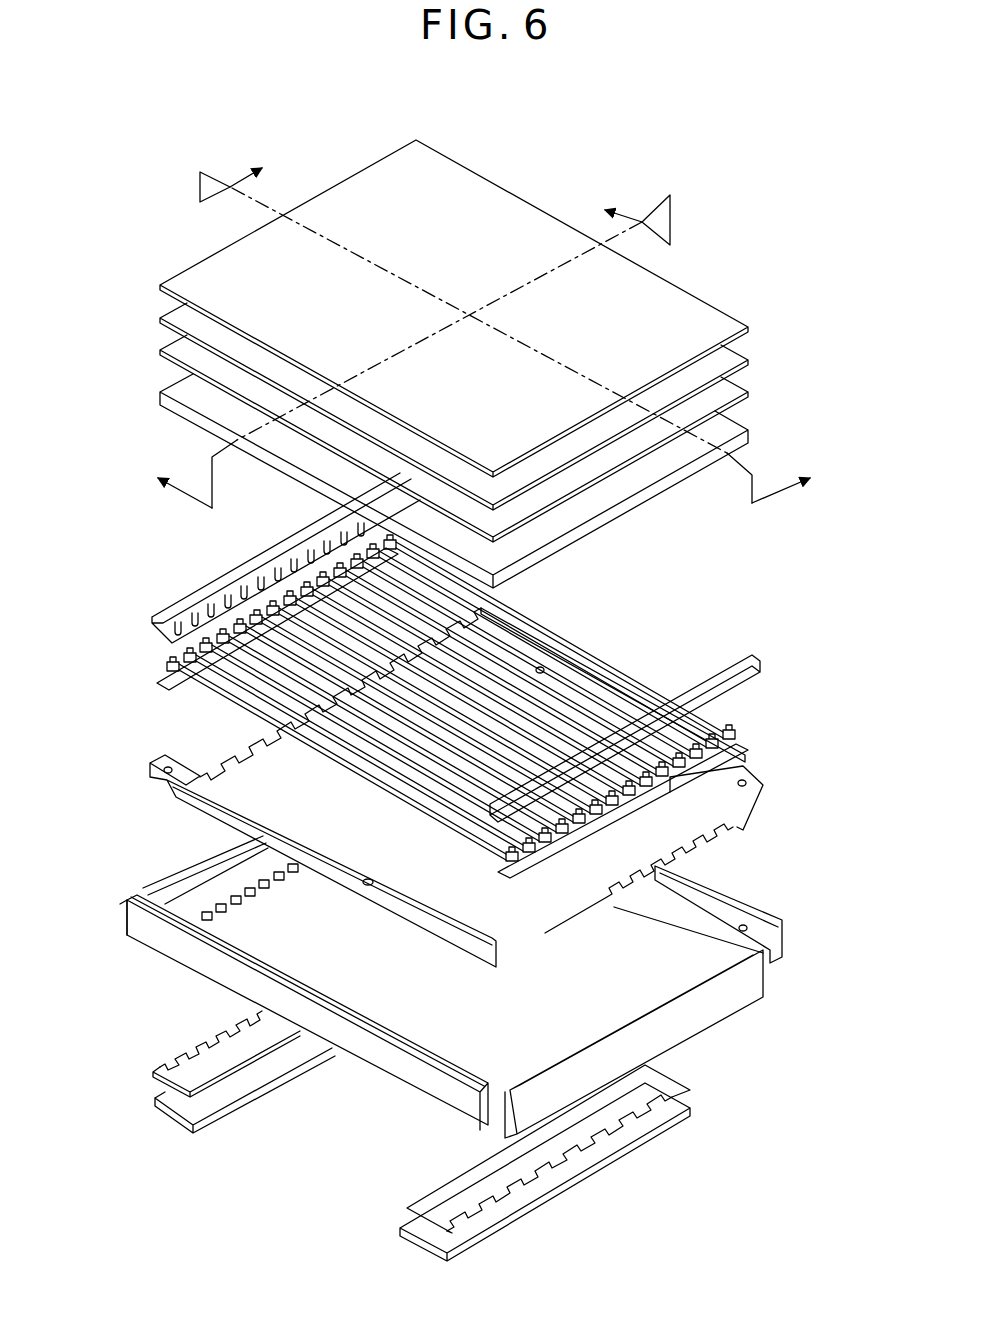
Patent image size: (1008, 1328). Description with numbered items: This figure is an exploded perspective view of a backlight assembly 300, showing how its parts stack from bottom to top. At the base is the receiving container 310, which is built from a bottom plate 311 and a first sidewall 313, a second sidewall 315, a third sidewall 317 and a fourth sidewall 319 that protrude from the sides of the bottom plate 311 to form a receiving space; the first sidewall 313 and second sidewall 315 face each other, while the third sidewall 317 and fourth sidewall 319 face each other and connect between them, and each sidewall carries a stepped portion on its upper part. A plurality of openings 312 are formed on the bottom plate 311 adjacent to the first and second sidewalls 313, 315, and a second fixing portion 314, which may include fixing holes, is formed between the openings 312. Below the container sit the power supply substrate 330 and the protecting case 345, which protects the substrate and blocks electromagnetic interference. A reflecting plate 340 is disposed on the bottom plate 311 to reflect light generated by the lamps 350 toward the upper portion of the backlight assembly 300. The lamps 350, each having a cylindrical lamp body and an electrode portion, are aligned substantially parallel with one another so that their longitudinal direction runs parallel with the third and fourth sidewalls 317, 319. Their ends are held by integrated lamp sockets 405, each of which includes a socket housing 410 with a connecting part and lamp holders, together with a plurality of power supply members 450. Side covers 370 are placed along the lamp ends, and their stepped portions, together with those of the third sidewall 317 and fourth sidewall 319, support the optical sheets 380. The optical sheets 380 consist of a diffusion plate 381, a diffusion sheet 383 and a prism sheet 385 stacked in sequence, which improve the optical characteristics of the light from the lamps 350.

The backlight assembly 300 is at (492, 111).
The optical sheets 380 is at (521, 364).
The prism sheet 385 is at (748, 327).
The diffusion sheet 383 is at (748, 365).
The diffusion plate 381 is at (492, 481).
The lamps 350 is at (556, 632).
The side covers 370 is at (758, 662).
The lamp sockets 405 is at (520, 706).
The power supply members 450 is at (757, 737).
The socket housing 410 is at (750, 752).
The reflecting plate 340 is at (735, 842).
The receiving container 310 is at (456, 994).
The third sidewall 317 is at (405, 1085).
The openings 312 is at (150, 896).
The second sidewall 315 is at (763, 977).
The bottom plate 311 is at (660, 987).
The fourth sidewall 319 is at (788, 945).
The first sidewall 313 is at (190, 868).
The second fixing portion 314 is at (152, 920).
The power supply substrate 330 is at (160, 1068).
The protecting case 345 is at (160, 1092).